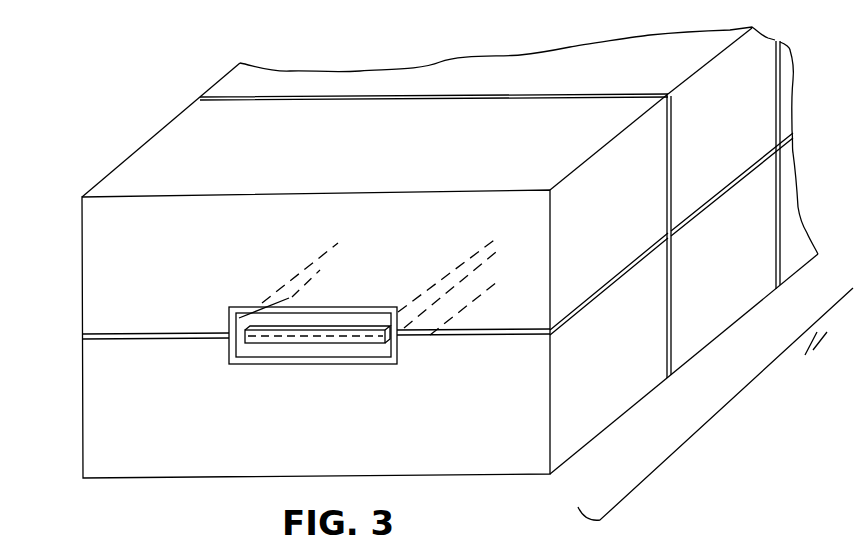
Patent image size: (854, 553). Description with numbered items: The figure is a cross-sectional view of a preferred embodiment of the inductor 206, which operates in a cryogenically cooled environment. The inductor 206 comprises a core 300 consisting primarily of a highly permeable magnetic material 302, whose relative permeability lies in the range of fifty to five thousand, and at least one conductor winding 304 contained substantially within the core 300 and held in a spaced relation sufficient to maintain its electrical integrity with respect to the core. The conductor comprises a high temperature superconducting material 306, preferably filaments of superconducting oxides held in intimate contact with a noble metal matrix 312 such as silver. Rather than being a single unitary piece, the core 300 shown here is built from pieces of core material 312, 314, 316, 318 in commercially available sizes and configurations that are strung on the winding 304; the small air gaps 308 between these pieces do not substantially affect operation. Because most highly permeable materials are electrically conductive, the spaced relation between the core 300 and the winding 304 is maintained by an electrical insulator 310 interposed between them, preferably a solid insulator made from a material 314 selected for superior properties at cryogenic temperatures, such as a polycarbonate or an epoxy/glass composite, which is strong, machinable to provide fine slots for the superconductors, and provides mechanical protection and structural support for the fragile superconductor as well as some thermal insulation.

The inductor 206 is at (72, 280).
The core 300 is at (705, 432).
The highly permeable magnetic material 302 is at (160, 447).
The conductor winding 304 is at (377, 340).
The high temperature superconducting material 306 is at (330, 332).
The air gaps 308 is at (673, 165).
The electrical insulator 310 is at (240, 320).
The piece of core material 312 is at (248, 325).
The piece of core material 314 is at (727, 315).
The piece of core material 316 is at (177, 140).
The piece of core material 318 is at (720, 93).